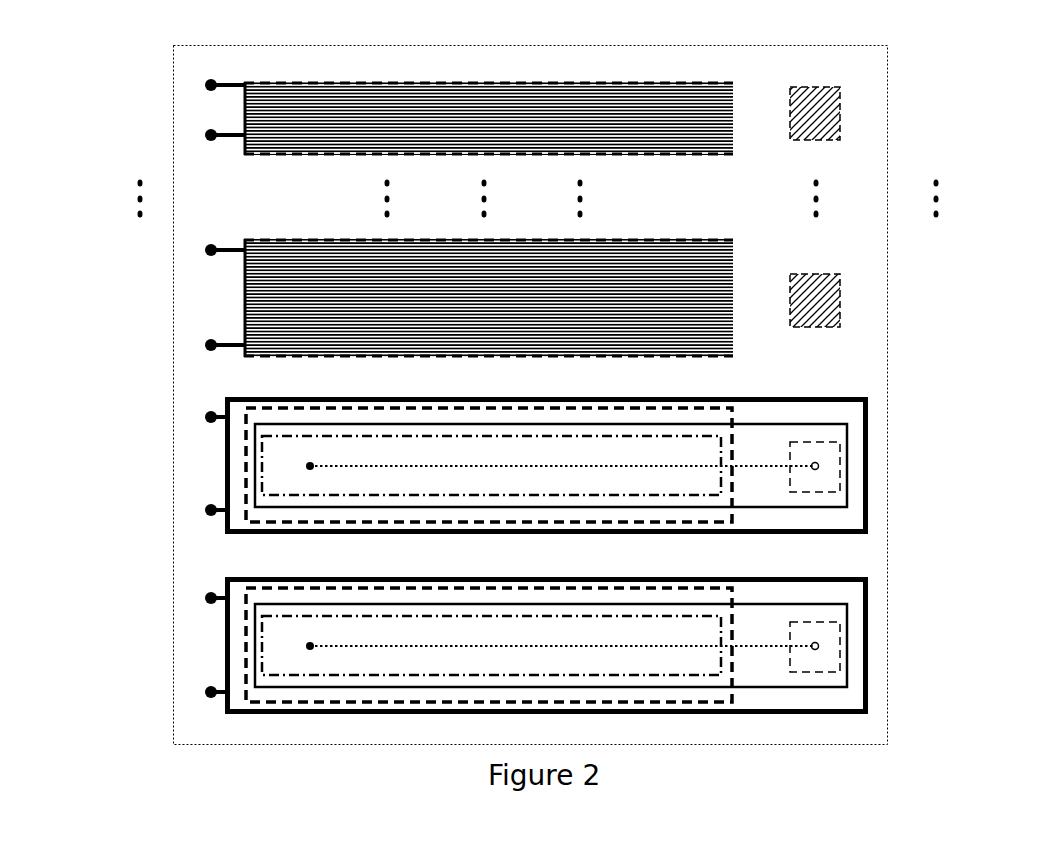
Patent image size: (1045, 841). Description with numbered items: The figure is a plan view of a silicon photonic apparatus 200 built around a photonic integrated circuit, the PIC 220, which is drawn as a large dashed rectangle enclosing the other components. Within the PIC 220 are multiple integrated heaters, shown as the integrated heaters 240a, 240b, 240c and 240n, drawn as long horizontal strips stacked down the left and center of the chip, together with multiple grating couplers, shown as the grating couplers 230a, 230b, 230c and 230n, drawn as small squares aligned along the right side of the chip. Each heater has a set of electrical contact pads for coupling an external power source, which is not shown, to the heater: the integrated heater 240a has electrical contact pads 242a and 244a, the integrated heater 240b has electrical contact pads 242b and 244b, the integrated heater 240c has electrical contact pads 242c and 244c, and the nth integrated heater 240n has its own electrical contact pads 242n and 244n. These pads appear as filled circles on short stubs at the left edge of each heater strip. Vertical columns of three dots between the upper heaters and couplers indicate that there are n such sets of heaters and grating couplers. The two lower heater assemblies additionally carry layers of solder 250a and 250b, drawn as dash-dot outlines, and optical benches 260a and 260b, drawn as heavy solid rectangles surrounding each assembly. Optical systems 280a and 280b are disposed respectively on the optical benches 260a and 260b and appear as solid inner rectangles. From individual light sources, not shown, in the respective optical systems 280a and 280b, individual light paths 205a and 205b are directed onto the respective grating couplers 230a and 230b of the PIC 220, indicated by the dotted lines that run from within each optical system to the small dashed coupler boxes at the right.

The silicon photonic apparatus 200 is at (107, 56).
The PIC 220 is at (549, 741).
The light path 205a is at (538, 625).
The light path 205b is at (538, 445).
The grating coupler 230a is at (841, 647).
The grating coupler 230b is at (841, 467).
The grating coupler 230c is at (840, 299).
The grating coupler 230n is at (840, 113).
The integrated heater 240a is at (245, 615).
The integrated heater 240b is at (245, 435).
The integrated heater 240c is at (244, 299).
The integrated heater 240n is at (244, 113).
The electrical contact pad 242a is at (205, 598).
The electrical contact pad 242b is at (205, 417).
The electrical contact pad 242c is at (205, 250).
The electrical contact pad 242n is at (205, 85).
The electrical contact pad 244a is at (205, 692).
The electrical contact pad 244b is at (205, 510).
The electrical contact pad 244c is at (205, 345).
The electrical contact pad 244n is at (205, 135).
The layer of solder 250a is at (262, 635).
The layer of solder 250b is at (262, 455).
The optical bench 260a is at (870, 578).
The optical bench 260b is at (870, 398).
The optical system 280a is at (849, 617).
The optical system 280b is at (849, 437).